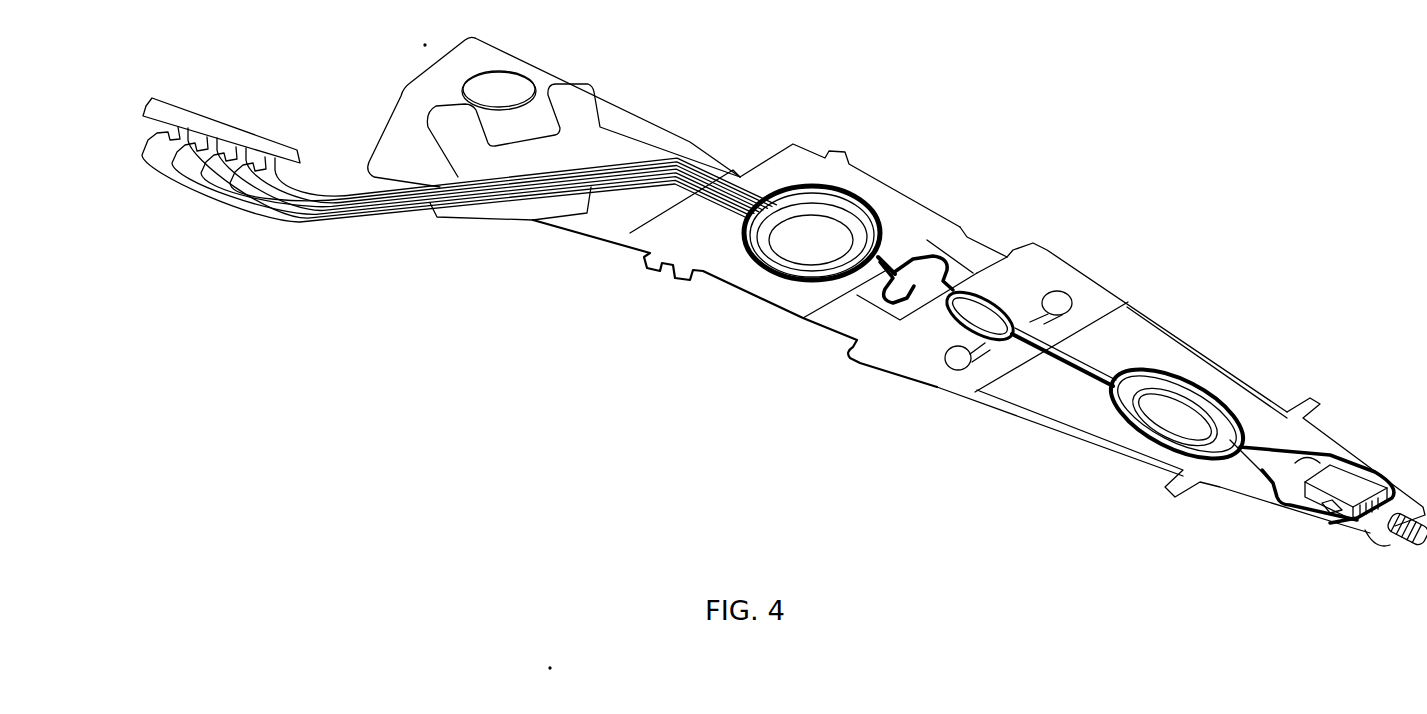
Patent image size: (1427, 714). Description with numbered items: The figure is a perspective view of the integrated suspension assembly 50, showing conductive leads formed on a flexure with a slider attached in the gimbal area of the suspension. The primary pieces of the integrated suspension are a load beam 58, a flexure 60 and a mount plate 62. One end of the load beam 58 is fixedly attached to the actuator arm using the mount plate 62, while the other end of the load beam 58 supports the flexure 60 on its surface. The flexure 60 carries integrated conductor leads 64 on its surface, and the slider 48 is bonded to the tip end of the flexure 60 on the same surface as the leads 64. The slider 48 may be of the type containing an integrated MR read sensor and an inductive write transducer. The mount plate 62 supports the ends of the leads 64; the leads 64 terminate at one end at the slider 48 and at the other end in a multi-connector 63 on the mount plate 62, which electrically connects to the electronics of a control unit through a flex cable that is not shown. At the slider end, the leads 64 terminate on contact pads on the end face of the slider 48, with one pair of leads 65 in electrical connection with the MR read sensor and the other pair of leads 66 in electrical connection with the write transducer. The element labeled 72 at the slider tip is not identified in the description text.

The integrated suspension assembly 50 is at (1133, 200).
The multi-connector 63 is at (192, 118).
The mount plate 62 is at (903, 223).
The flexure 60 is at (1113, 333).
The load beam 58 is at (960, 380).
The conductor leads 64 is at (1120, 372).
The leads in electrical connection with the write transducer 66 is at (1385, 495).
The slider 48 is at (1337, 477).
The leads in electrical connection with the MR read sensor 65 is at (1353, 530).
The pin 72 is at (1397, 537).